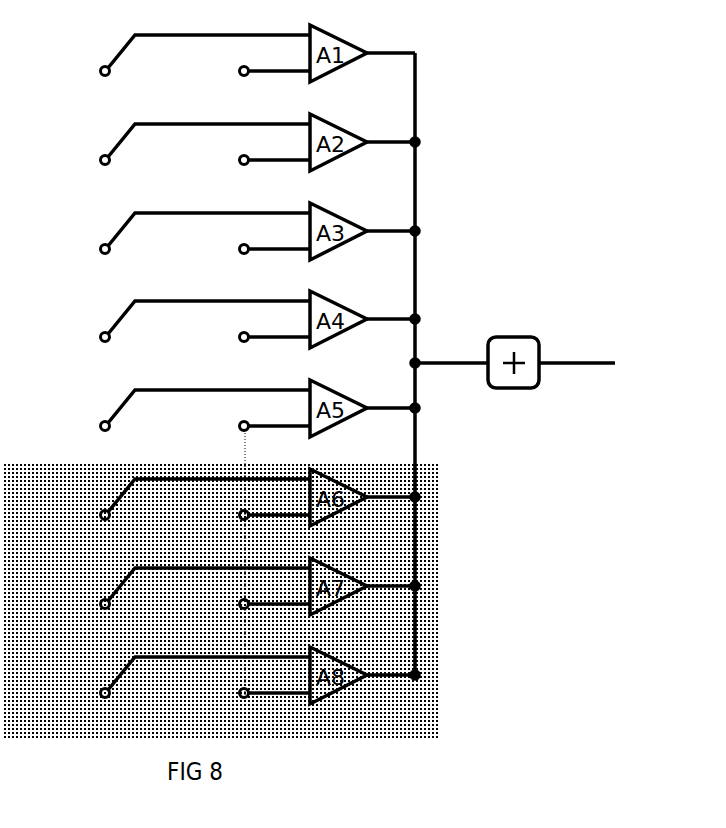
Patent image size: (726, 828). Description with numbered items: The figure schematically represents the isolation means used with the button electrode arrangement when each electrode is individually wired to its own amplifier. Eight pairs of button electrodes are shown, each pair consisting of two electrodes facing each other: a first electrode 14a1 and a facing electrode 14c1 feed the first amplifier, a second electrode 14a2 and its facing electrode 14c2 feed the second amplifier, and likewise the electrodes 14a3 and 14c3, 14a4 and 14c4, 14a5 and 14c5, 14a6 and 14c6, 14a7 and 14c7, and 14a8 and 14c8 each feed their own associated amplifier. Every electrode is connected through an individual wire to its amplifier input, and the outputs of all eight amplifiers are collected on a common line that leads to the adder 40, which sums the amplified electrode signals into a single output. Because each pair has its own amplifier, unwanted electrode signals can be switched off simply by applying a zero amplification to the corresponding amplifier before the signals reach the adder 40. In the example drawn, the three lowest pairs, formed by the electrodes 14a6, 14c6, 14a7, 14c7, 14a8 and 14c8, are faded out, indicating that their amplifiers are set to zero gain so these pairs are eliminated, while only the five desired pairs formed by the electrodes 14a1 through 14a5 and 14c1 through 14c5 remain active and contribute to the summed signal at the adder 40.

The button electrode 14a1 is at (98, 75).
The button electrode 14a2 is at (98, 164).
The button electrode 14a3 is at (98, 253).
The button electrode 14a4 is at (98, 341).
The button electrode 14a5 is at (98, 430).
The button electrode 14a6 is at (98, 519).
The button electrode 14a7 is at (98, 608).
The button electrode 14a8 is at (98, 697).
The button electrode 14c1 is at (238, 75).
The button electrode 14c2 is at (238, 164).
The button electrode 14c3 is at (238, 253).
The button electrode 14c4 is at (238, 341).
The button electrode 14c5 is at (238, 430).
The button electrode 14c6 is at (238, 519).
The button electrode 14c7 is at (238, 608).
The button electrode 14c8 is at (238, 697).
The adder 40 is at (518, 335).